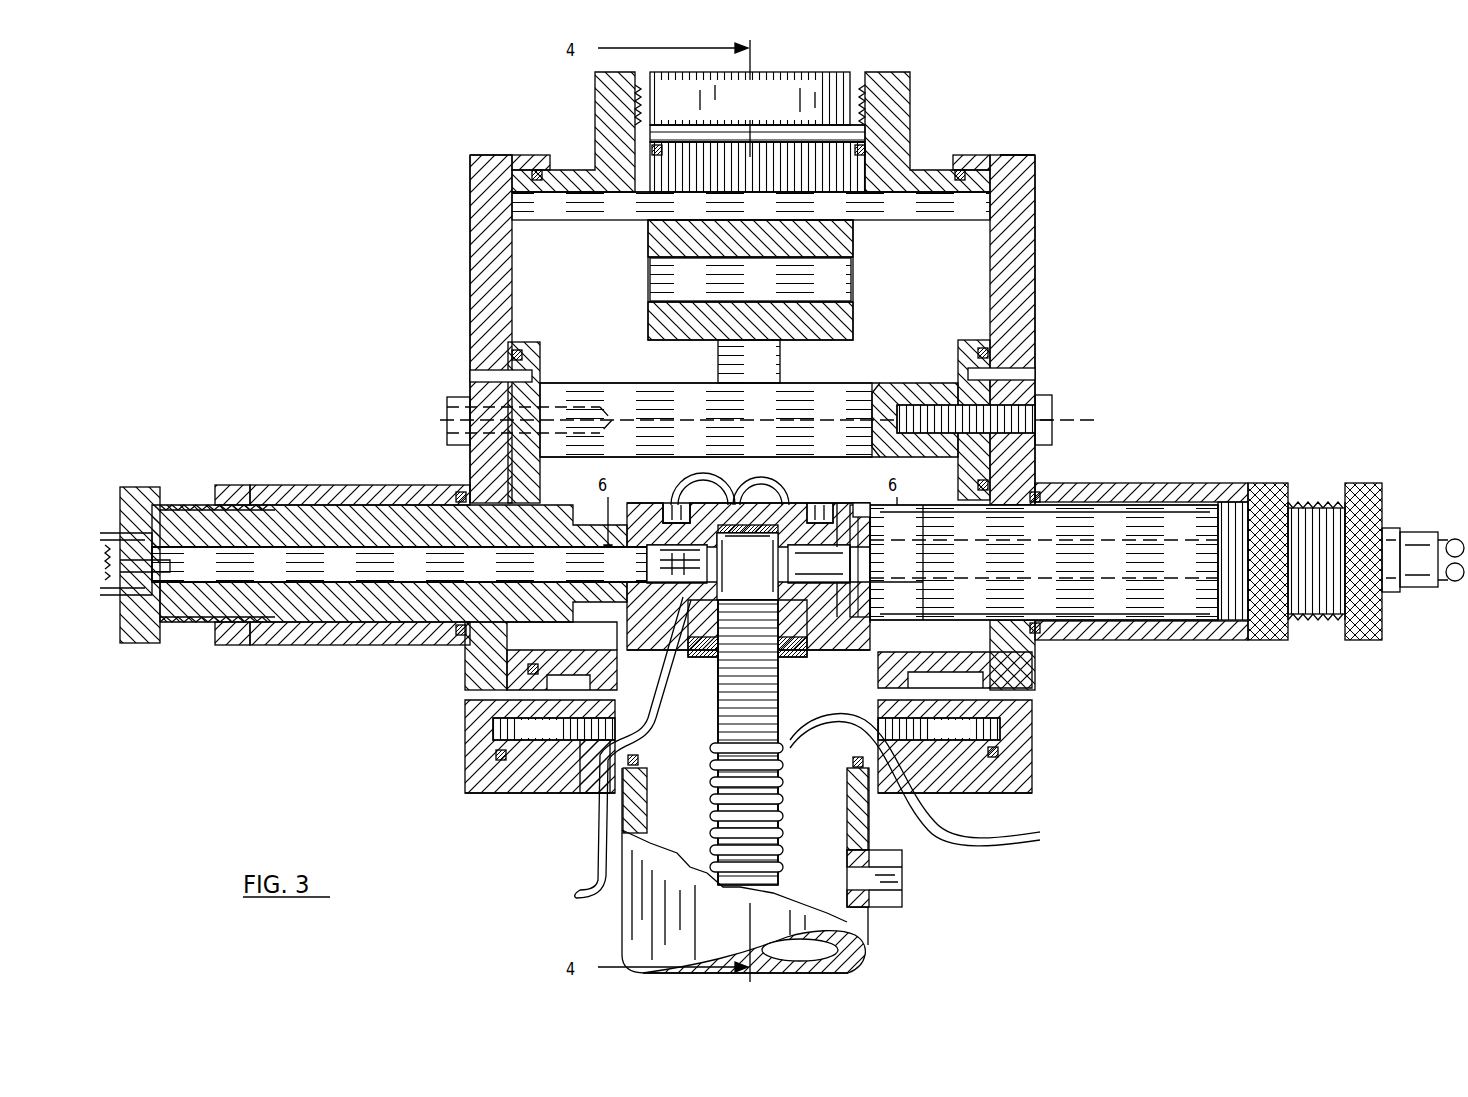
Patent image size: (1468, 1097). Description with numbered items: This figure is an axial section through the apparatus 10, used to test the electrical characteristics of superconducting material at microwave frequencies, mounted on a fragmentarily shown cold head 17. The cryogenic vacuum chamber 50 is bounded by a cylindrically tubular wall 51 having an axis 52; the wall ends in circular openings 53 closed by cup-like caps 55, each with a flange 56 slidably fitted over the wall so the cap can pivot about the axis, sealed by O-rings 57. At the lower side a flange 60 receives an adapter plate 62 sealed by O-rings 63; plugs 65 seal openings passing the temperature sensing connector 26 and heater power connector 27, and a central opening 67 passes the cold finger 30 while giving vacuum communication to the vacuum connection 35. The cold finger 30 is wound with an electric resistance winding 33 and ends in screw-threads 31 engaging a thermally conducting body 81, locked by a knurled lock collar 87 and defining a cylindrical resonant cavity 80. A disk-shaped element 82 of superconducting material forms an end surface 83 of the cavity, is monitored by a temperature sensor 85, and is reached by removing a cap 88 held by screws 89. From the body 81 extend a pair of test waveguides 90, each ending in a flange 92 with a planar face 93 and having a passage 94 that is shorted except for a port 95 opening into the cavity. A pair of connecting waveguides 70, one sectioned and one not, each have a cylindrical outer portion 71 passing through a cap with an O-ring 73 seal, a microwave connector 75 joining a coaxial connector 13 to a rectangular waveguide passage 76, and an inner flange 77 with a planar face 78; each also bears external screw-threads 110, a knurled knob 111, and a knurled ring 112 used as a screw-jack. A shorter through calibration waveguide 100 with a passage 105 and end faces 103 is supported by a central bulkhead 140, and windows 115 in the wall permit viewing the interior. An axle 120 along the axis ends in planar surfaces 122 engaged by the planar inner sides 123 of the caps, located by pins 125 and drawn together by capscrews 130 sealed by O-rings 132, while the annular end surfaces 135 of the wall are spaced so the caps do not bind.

The apparatus 10 is at (1082, 210).
The coaxial connector 13 is at (1445, 545).
The cold head 17 is at (905, 905).
The temperature sensing connector 26 is at (590, 862).
The heater power connector 27 is at (1005, 850).
The cold finger 30 is at (792, 690).
The screw-threads 31 is at (716, 690).
The electric resistance winding 33 is at (712, 792).
The vacuum connection 35 is at (905, 875).
The cryogenic vacuum chamber 50 is at (1000, 275).
The cylindrically tubular wall 51 is at (922, 148).
The axis 52 is at (1075, 420).
The circular openings 53 is at (535, 268).
The end plates or caps 55 is at (485, 152).
The flange 56 is at (532, 162).
The O-rings 57 is at (540, 170).
The flange 60 is at (1035, 700).
The adapter plate 62 is at (1035, 793).
The O-rings 63 is at (1000, 748).
The plugs 65 is at (588, 740).
The central opening 67 is at (640, 760).
The connecting waveguides 70 is at (178, 490).
The cylindrical outer portion 71 is at (385, 500).
The O-ring 73 is at (458, 636).
The microwave connector 75 is at (1392, 592).
The waveguide passage 76 is at (318, 560).
The flange 77 is at (870, 505).
The planar face 78 is at (658, 508).
The cylindrical resonant cavity 80 is at (754, 591).
The thermally conducting body 81 is at (664, 650).
The element of superconducting material 82 is at (762, 478).
The end surface 83 is at (766, 540).
The temperature sensor 85 is at (738, 448).
The knurled lock collar 87 is at (800, 650).
The cap 88 is at (848, 505).
The screws 89 is at (800, 505).
The test or body waveguides 90 is at (688, 640).
The flange 92 is at (852, 625).
The planar face 93 is at (858, 512).
The passage 94 is at (856, 562).
The port 95 is at (788, 548).
The shorter through calibration waveguide 100 is at (868, 228).
The planar junction surface or face 103 is at (855, 312).
The passage 105 is at (840, 276).
The external screw-threads 110 is at (200, 505).
The knurled knob 111 is at (1365, 485).
The knurled ring 112 is at (238, 487).
The windows 115 is at (780, 72).
The axle 120 is at (622, 383).
The planar surfaces 122 is at (522, 432).
The planar inner sides 123 is at (522, 200).
The pin 125 is at (470, 376).
The capscrew 130 is at (447, 400).
The O-ring 132 is at (518, 350).
The annular end surfaces 135 is at (470, 180).
The bulkhead 140 is at (782, 360).